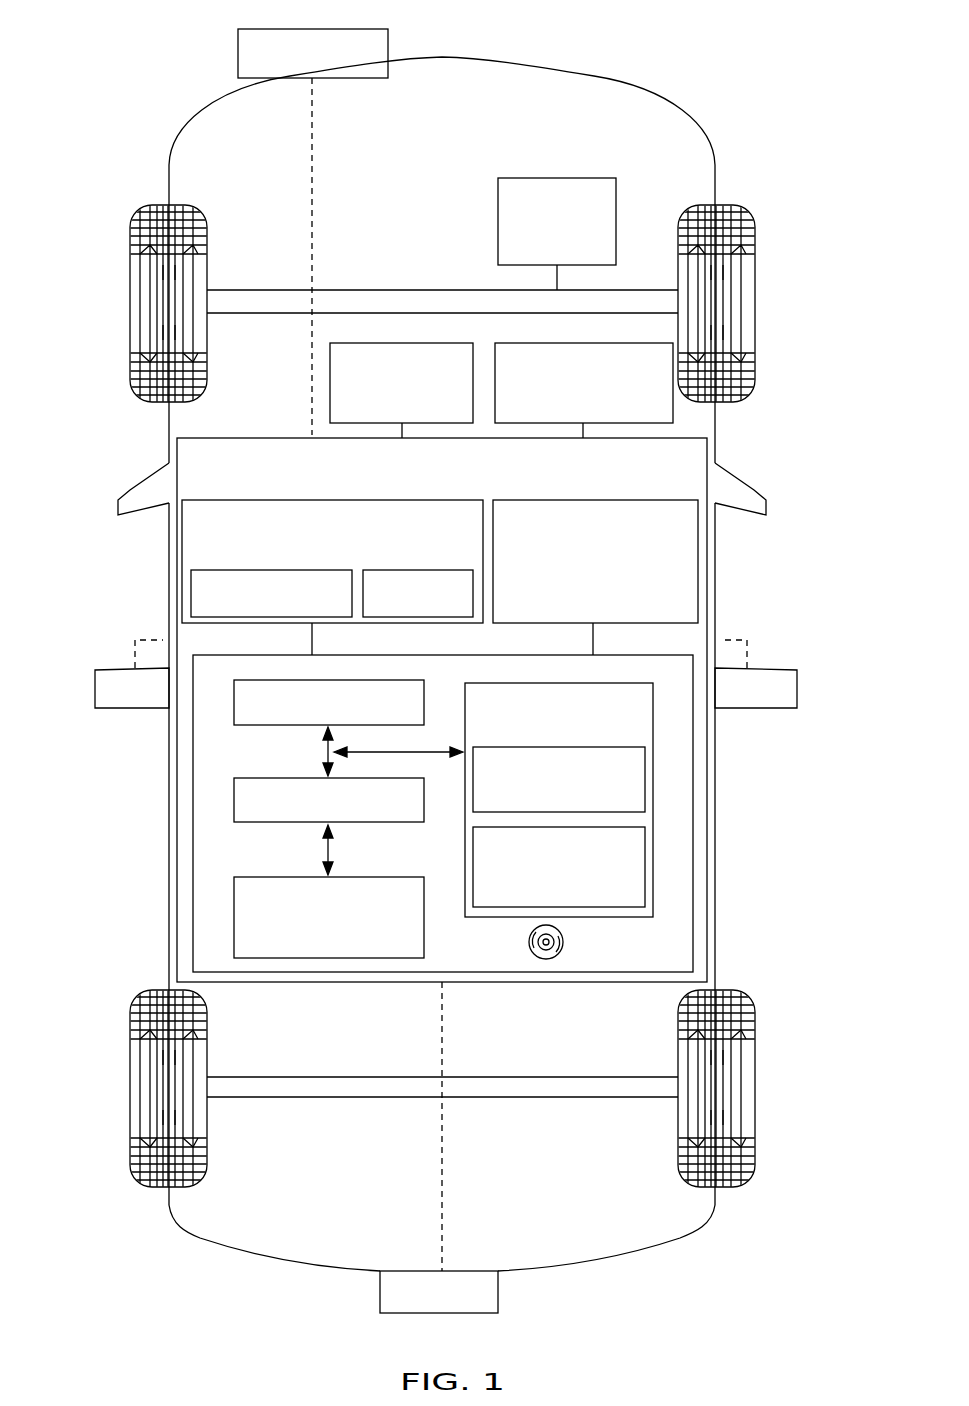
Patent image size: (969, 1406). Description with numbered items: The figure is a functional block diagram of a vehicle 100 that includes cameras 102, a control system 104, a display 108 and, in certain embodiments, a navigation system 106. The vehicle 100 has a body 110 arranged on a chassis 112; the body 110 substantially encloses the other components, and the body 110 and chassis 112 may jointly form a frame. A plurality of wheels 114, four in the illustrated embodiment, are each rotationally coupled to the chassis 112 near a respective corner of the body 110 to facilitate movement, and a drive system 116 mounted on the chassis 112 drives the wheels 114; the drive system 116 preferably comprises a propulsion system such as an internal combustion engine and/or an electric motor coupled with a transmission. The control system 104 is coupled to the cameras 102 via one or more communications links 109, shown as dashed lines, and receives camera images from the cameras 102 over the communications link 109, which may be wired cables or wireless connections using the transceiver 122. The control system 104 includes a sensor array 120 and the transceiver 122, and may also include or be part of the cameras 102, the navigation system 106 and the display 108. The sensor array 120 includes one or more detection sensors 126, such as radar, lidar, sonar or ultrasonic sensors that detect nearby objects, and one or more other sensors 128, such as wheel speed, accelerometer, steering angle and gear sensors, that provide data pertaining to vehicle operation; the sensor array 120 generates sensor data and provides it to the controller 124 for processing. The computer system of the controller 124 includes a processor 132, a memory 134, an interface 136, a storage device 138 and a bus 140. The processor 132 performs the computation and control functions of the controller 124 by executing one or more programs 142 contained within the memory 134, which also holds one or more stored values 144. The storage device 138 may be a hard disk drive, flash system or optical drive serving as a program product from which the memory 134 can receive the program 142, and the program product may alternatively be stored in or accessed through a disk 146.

The vehicle 100 is at (748, 86).
The cameras 102 is at (238, 50).
The control system 104 is at (283, 438).
The navigation system 106 is at (673, 400).
The display 108 is at (330, 387).
The communications link 109 is at (312, 133).
The body 110 is at (169, 717).
The chassis 112 is at (268, 262).
The wheels 114 is at (150, 212).
The drive system 116 is at (498, 216).
The sensor array 120 is at (283, 500).
The transceiver 122 is at (638, 500).
The controller 124 is at (570, 655).
The detection sensors 126 is at (191, 592).
The other sensors 128 is at (396, 570).
The processor 132 is at (234, 700).
The memory 134 is at (653, 712).
The interface 136 is at (234, 800).
The storage device 138 is at (234, 903).
The bus 140 is at (328, 750).
The program 142 is at (645, 782).
The stored values 144 is at (645, 863).
The disk 146 is at (563, 950).